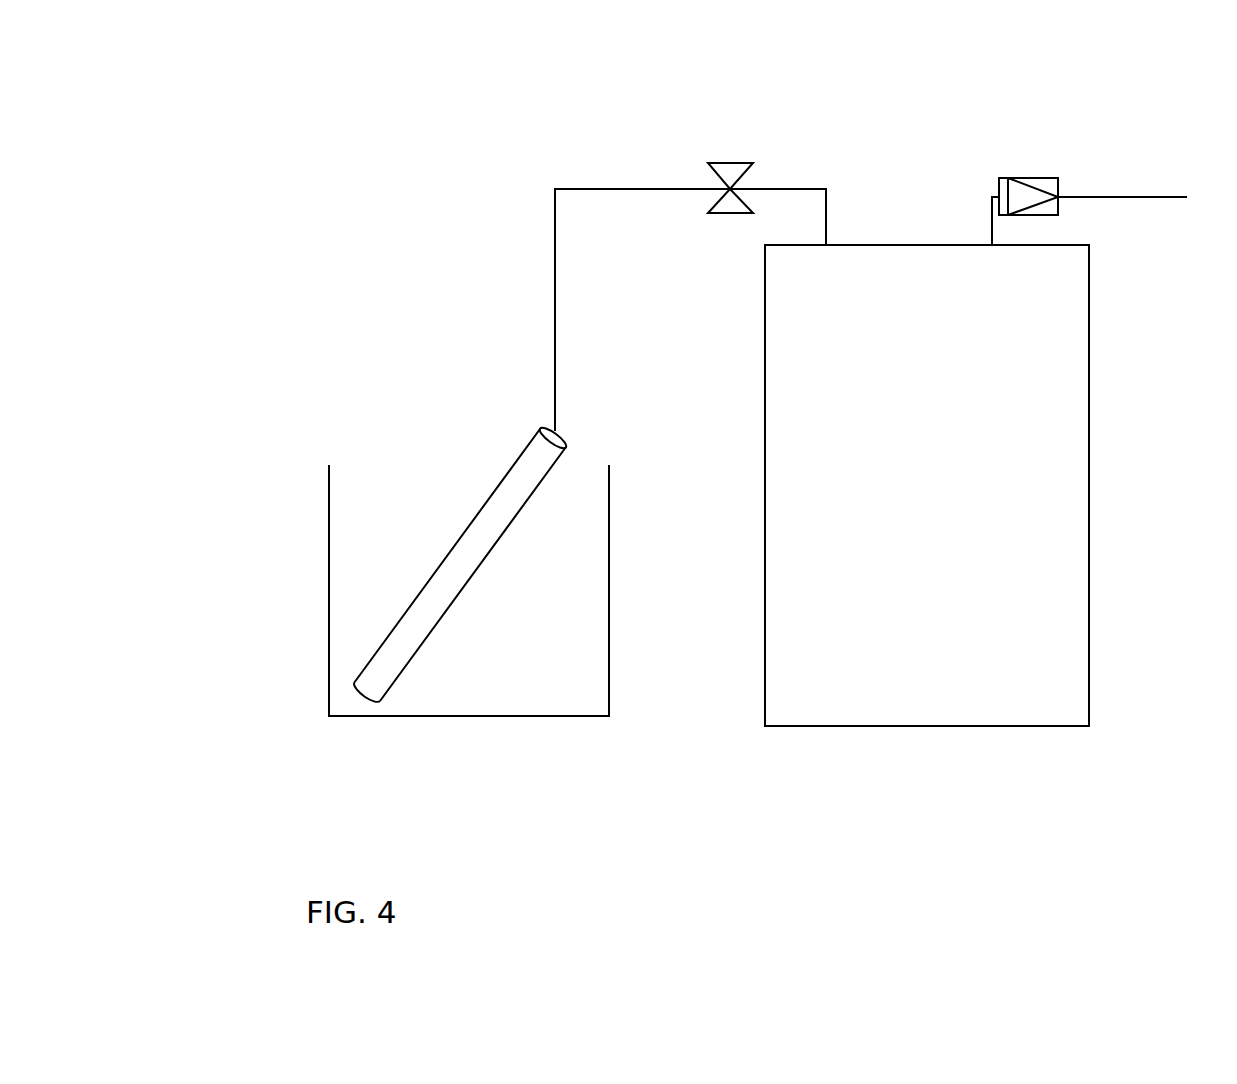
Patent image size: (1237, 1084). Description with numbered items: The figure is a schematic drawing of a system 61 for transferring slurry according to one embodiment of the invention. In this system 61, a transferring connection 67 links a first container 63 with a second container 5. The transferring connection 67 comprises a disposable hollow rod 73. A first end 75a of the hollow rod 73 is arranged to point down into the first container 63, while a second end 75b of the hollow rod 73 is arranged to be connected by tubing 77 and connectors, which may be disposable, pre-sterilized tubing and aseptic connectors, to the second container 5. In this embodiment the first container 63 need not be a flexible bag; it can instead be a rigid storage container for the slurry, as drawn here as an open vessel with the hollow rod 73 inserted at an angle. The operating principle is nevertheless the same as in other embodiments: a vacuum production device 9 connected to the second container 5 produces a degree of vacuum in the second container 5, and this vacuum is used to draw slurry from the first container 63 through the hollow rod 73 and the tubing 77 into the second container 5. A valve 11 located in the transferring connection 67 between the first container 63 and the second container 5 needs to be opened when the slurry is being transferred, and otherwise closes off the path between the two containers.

The system 61 is at (433, 170).
The transferring connection 67 is at (633, 317).
The first container 63 is at (329, 648).
The disposable hollow rod 73 is at (461, 597).
The first end of the hollow rod 75a is at (385, 705).
The second end of the hollow rod 75b is at (543, 430).
The tubing 77 is at (555, 276).
The valve 11 is at (747, 171).
The second container 5 is at (1090, 486).
The vacuum production device 9 is at (1060, 188).